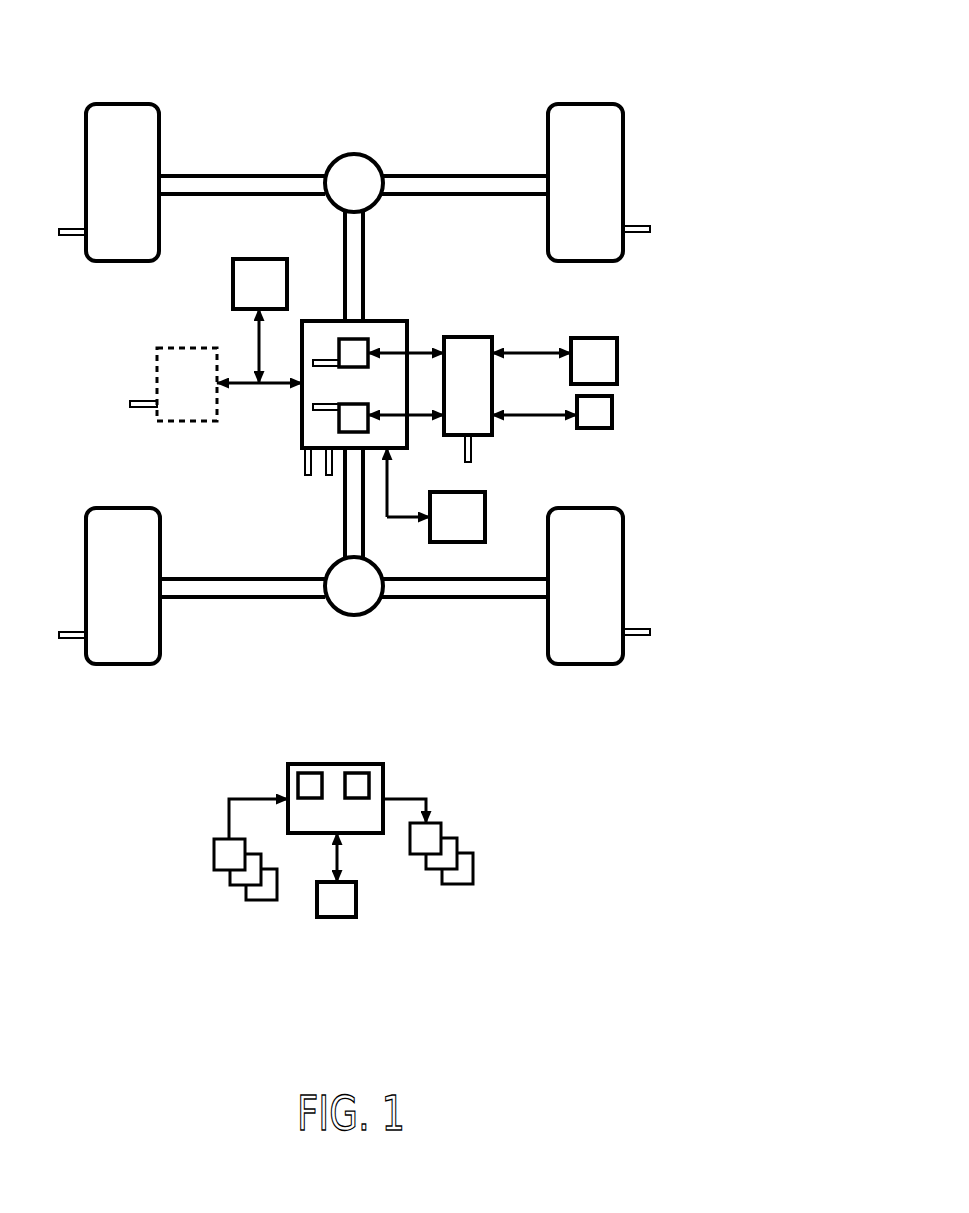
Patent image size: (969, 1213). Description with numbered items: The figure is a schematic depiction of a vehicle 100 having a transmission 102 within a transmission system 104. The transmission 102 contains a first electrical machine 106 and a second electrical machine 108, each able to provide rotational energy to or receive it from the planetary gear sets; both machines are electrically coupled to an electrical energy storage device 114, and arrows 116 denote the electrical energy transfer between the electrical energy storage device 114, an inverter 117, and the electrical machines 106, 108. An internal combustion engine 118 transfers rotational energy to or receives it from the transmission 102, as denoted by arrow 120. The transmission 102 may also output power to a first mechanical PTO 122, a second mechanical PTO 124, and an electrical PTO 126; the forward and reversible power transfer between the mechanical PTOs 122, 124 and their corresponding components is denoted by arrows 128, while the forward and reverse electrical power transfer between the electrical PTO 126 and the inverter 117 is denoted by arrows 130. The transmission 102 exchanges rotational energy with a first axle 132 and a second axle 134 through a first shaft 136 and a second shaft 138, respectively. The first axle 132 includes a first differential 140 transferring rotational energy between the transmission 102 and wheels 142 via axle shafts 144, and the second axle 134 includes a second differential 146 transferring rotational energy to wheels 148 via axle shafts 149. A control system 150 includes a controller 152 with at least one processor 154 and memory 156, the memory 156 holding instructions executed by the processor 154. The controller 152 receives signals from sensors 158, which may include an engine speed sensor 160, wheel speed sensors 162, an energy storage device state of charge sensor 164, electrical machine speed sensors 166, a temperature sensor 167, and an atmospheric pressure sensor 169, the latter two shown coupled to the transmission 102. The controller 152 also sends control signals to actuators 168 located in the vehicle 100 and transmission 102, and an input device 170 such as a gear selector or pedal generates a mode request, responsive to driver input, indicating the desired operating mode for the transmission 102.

The vehicle 100 is at (740, 75).
The transmission 102 is at (388, 321).
The transmission system 104 is at (126, 326).
The first electrical machine 106 is at (340, 416).
The second electrical machine 108 is at (339, 351).
The electrical energy storage device 114 is at (618, 378).
The arrows 116 is at (413, 350).
The inverter 117 is at (466, 337).
The internal combustion engine 118 is at (163, 423).
The arrow 120 is at (266, 388).
The first mechanical PTO 122 is at (233, 300).
The second mechanical PTO 124 is at (486, 528).
The electrical PTO 126 is at (595, 428).
The arrows 128 is at (257, 348).
The arrows 130 is at (533, 416).
The first axle 132 is at (414, 148).
The second axle 134 is at (405, 630).
The first shaft 136 is at (364, 237).
The second shaft 138 is at (345, 539).
The first differential 140 is at (352, 153).
The wheels 142 is at (120, 104).
The axle shafts 144 is at (231, 176).
The second differential 146 is at (352, 615).
The wheels 148 is at (121, 664).
The axle shafts 149 is at (231, 597).
The control system 150 is at (474, 768).
The controller 152 is at (296, 764).
The processor 154 is at (298, 780).
The memory 156 is at (369, 784).
The sensors 158 is at (285, 904).
The engine speed sensor 160 is at (137, 408).
The wheel speed sensors 162 is at (71, 236).
The energy storage device state of charge sensor 164 is at (474, 446).
The electrical machine speed sensors 166 is at (323, 368).
The temperature sensor 167 is at (329, 476).
The actuators 168 is at (487, 887).
The atmospheric pressure sensor 169 is at (305, 462).
The input device 170 is at (337, 918).